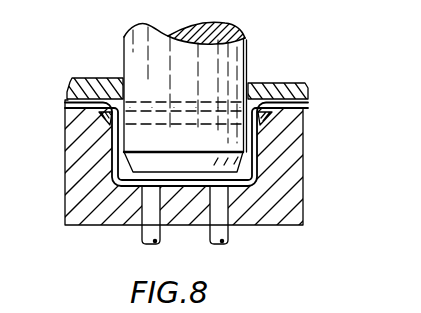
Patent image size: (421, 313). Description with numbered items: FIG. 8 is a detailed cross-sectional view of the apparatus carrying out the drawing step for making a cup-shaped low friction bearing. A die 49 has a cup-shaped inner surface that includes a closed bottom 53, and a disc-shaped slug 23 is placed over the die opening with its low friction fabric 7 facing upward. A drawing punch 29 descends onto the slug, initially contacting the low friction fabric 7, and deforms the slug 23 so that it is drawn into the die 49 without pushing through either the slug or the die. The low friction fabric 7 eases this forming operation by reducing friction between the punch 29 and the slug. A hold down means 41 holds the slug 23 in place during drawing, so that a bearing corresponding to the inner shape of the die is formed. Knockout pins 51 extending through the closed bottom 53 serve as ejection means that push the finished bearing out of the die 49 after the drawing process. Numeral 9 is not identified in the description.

The low friction fabric 7 is at (65, 99).
The seal cup 9 is at (67, 107).
The disc-shaped slug 23 is at (309, 108).
The drawing punch 29 is at (241, 66).
The hold down means 41 is at (97, 78).
The die 49 is at (295, 171).
The knockout pins 51 is at (222, 242).
The closed bottom 53 is at (240, 187).